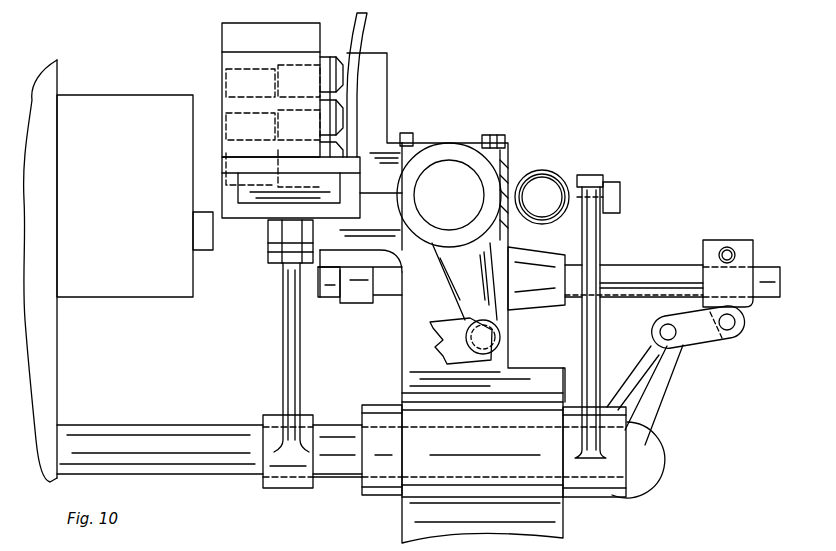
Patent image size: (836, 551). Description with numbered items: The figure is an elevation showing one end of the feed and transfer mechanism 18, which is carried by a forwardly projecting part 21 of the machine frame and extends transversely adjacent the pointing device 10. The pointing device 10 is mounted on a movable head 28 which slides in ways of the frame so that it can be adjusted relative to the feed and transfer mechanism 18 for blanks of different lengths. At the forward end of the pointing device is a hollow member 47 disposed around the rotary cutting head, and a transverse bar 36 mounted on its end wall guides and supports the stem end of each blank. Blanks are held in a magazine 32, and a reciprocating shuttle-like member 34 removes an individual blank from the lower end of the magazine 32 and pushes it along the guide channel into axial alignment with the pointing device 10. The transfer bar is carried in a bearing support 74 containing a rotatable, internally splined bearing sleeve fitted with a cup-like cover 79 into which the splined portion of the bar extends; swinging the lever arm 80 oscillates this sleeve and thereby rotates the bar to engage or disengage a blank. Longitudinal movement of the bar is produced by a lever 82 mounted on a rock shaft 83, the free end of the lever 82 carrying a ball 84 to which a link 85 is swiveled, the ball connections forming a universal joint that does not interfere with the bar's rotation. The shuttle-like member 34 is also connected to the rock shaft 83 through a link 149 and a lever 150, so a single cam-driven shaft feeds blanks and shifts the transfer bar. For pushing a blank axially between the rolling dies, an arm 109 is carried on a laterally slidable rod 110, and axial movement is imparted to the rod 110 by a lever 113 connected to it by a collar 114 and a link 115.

The pointing device 10 is at (152, 96).
The feed and transfer mechanism 18 is at (468, 140).
The forwardly projecting frame part 21 is at (555, 517).
The movable head 28 is at (60, 83).
The magazine 32 is at (352, 110).
The shuttle-like member 34 is at (258, 197).
The transverse bar 36 is at (209, 243).
The hollow member 47 is at (193, 283).
The bearing support 74 is at (505, 160).
The cup-like cover 79 is at (440, 170).
The lever arm 80 is at (450, 277).
The lever 82 is at (600, 347).
The rock shaft 83 is at (218, 432).
The ball 84 is at (540, 182).
The link 85 is at (548, 175).
The arm 109 is at (345, 300).
The laterally slidable rod 110 is at (640, 262).
The lever 113 is at (656, 350).
The collar 114 is at (713, 253).
The link 115 is at (678, 318).
The link 149 is at (270, 265).
The lever 150 is at (288, 329).